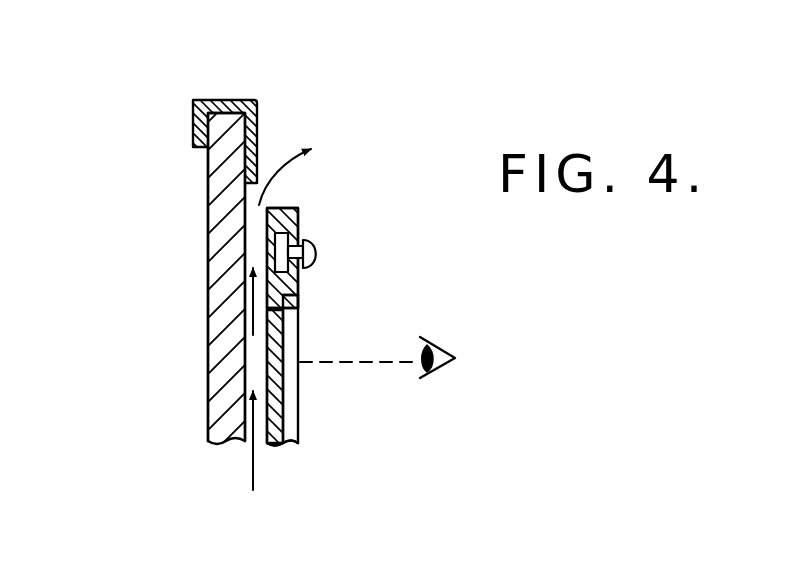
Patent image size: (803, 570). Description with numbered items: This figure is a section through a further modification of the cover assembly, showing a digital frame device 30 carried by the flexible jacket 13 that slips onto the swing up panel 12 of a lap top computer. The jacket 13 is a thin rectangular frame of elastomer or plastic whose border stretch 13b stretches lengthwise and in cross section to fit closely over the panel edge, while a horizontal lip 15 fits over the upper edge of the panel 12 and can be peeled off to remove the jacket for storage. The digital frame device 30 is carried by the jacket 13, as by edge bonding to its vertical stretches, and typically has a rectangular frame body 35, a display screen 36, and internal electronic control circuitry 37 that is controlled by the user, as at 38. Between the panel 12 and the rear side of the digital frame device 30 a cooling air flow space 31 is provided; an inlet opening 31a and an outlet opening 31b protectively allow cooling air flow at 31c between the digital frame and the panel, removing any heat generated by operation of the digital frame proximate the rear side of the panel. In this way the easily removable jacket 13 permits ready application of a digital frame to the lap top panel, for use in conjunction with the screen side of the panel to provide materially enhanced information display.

The swing up panel 12 is at (206, 352).
The frame or jacket 13 is at (205, 86).
The border stretch 13b is at (259, 132).
The lip 15 is at (193, 127).
The digital frame device 30 is at (274, 285).
The cooling air flow space 31 is at (250, 230).
The inlet opening 31a is at (270, 430).
The outlet opening 31b is at (272, 198).
The cooling air flow 31c is at (300, 308).
The rectangular frame body 35 is at (276, 234).
The display screen 36 is at (287, 390).
The internal electronic control circuitry 37 is at (298, 222).
The user control 38 is at (318, 260).